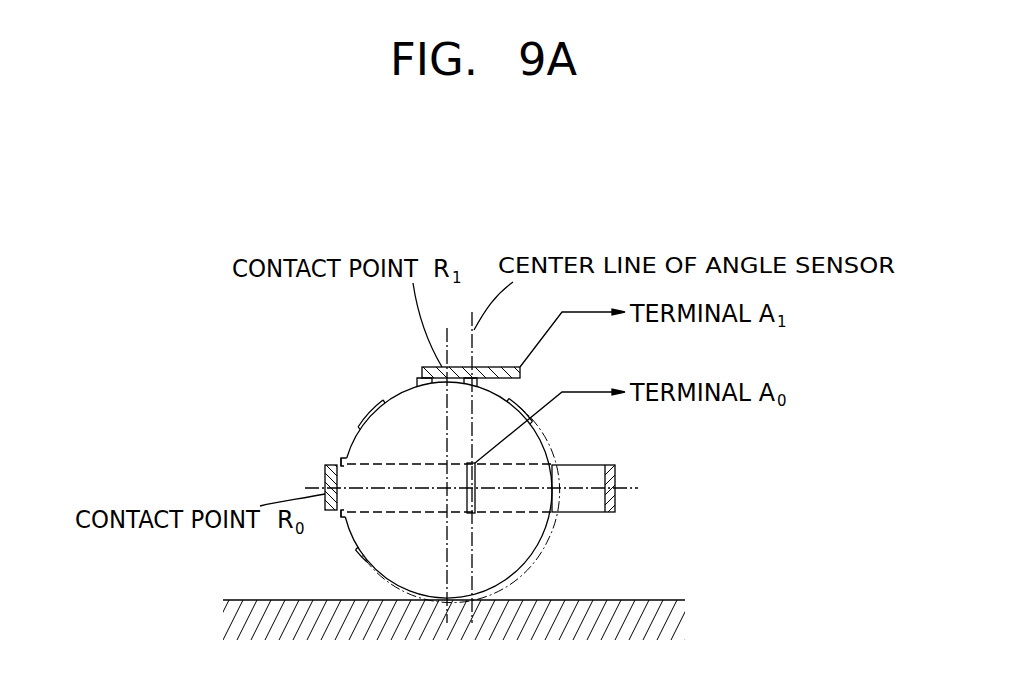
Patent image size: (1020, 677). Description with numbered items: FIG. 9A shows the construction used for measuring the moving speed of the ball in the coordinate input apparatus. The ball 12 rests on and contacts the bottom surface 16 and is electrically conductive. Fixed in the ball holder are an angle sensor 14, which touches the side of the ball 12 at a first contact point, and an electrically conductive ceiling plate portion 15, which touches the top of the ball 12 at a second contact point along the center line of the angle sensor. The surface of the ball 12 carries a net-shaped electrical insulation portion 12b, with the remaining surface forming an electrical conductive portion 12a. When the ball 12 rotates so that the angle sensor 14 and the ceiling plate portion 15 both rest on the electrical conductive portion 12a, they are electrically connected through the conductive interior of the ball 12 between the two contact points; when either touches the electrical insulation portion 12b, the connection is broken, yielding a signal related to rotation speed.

The ball 12 is at (383, 400).
The electrical conductive portion 12a is at (350, 440).
The electrical insulation portion 12b is at (342, 458).
The angle sensor 14 is at (615, 473).
The ceiling plate portion 15 is at (427, 367).
The bottom surface 16 is at (632, 605).